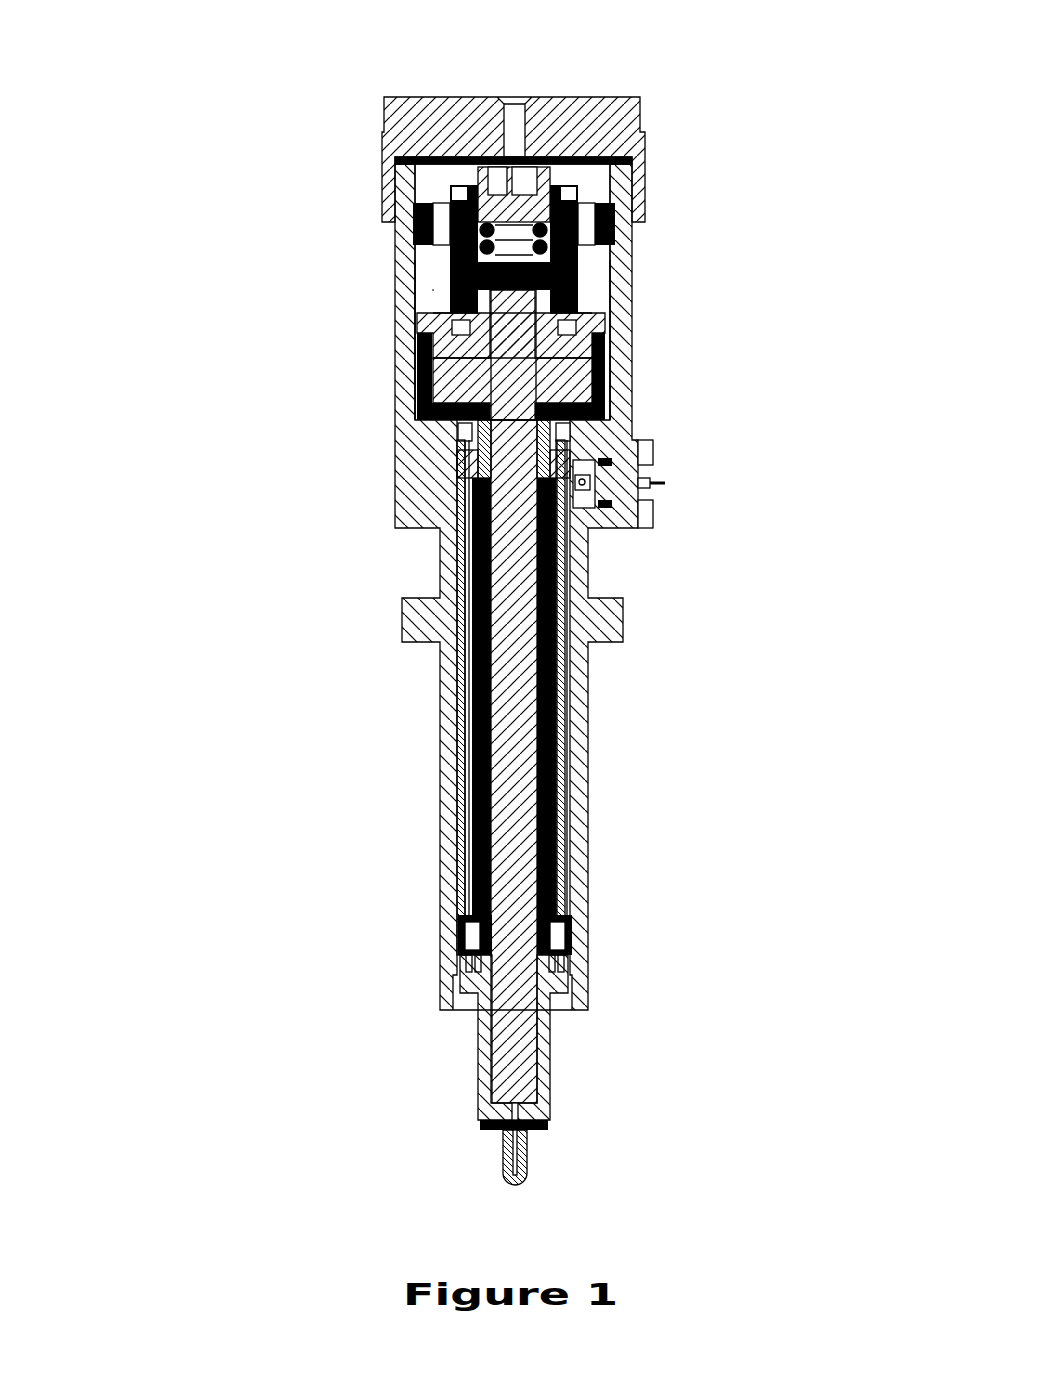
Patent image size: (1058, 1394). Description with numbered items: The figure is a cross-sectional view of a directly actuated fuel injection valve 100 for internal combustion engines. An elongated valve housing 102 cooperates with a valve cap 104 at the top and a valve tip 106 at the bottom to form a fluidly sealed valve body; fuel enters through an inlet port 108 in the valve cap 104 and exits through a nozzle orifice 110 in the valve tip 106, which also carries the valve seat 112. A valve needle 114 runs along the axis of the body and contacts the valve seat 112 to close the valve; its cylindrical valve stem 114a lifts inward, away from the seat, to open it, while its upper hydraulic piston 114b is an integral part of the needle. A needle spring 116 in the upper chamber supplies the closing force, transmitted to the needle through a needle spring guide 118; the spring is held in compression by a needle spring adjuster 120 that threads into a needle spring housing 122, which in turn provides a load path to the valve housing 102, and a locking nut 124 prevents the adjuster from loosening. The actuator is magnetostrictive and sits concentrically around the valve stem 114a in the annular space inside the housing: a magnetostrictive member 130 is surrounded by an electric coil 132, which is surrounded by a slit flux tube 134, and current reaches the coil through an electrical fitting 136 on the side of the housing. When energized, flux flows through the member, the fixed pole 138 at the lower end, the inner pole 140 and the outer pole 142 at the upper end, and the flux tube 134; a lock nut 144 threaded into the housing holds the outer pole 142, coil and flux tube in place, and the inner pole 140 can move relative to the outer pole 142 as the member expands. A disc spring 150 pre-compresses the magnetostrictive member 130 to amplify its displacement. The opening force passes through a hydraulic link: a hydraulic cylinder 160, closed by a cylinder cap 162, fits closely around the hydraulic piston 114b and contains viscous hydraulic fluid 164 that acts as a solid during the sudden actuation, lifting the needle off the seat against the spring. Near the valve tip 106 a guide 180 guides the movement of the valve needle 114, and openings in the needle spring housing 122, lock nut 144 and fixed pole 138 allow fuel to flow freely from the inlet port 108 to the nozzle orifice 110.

The fuel injection valve 100 is at (326, 56).
The valve housing 102 is at (408, 445).
The valve cap 104 is at (622, 122).
The valve tip 106 is at (550, 1035).
The inlet port 108 is at (524, 110).
The nozzle orifice 110 is at (508, 1178).
The valve seat 112 is at (550, 1095).
The valve needle 114 is at (548, 603).
The valve stem 114a is at (553, 742).
The hydraulic piston 114b is at (560, 360).
The needle spring 116 is at (448, 197).
The needle spring guide 118 is at (572, 258).
The needle spring adjuster 120 is at (530, 178).
The needle spring housing 122 is at (590, 218).
The locking nut 124 is at (592, 178).
The magnetostrictive member 130 is at (465, 780).
The electric coil 132 is at (462, 725).
The flux tube 134 is at (458, 685).
The electrical fitting 136 is at (640, 466).
The fixed pole 138 is at (470, 935).
The inner pole 140 is at (430, 382).
The outer pole 142 is at (432, 410).
The lock nut 144 is at (565, 412).
The disc spring 150 is at (577, 330).
The hydraulic cylinder 160 is at (557, 372).
The cylinder cap 162 is at (430, 305).
The hydraulic fluid 164 is at (445, 338).
The guide 180 is at (566, 945).